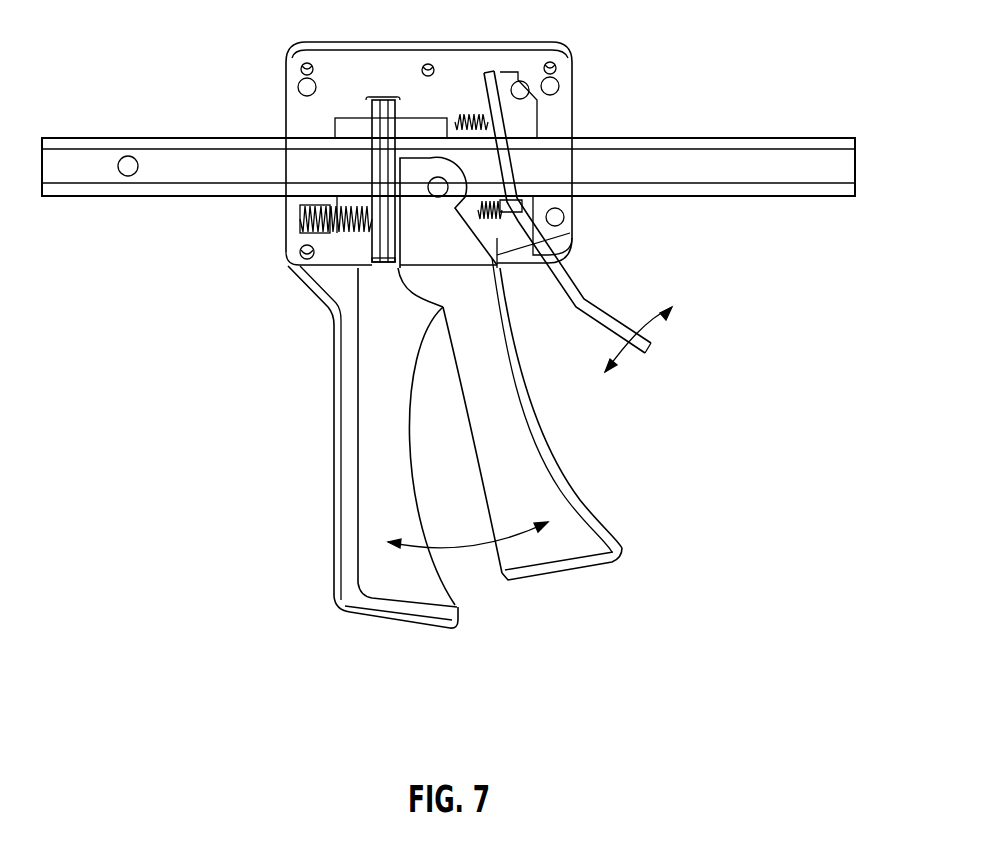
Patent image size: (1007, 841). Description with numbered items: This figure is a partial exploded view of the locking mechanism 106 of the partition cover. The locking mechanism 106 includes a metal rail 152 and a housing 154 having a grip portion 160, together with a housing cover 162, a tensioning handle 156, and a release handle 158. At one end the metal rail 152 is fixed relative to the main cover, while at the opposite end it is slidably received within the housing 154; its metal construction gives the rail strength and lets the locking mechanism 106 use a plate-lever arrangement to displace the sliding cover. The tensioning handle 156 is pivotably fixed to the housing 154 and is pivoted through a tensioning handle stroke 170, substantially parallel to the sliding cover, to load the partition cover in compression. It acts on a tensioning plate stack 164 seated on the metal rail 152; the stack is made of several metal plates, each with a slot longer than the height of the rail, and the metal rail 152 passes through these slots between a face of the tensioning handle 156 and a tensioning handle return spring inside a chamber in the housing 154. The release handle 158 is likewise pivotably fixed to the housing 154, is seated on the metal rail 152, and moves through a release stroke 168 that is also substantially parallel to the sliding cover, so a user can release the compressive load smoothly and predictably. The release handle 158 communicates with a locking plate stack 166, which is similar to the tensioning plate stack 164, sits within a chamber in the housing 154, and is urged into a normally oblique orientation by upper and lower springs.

The locking mechanism 106 is at (253, 417).
The metal rail 152 is at (712, 172).
The housing 154 is at (347, 82).
The tensioning handle 156 is at (520, 448).
The release handle 158 is at (597, 308).
The grip portion 160 is at (380, 573).
The housing cover 162 is at (375, 247).
The tensioning plate stack 164 is at (385, 99).
The locking plate stack 166 is at (503, 78).
The release stroke 168 is at (658, 335).
The tensioning handle stroke 170 is at (463, 552).